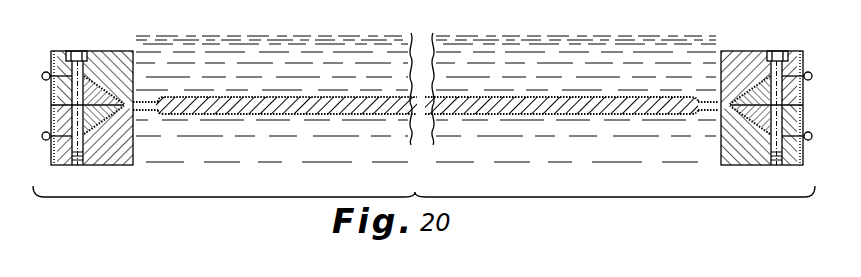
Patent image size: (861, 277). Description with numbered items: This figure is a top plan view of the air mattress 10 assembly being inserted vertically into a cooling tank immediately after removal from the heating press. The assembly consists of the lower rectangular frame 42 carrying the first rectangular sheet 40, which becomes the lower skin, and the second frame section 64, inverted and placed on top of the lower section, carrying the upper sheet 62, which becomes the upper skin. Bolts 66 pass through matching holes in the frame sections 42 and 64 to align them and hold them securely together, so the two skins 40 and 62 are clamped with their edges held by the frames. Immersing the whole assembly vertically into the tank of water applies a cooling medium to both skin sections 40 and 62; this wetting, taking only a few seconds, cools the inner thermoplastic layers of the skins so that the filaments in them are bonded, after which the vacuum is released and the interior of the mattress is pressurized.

The air mattress 10 is at (426, 99).
The first rectangular sheet 40 is at (278, 116).
The rectangular frame 42 is at (95, 166).
The upper sheet 62 is at (314, 96).
The second frame section 64 is at (107, 51).
The bolts 66 is at (78, 50).